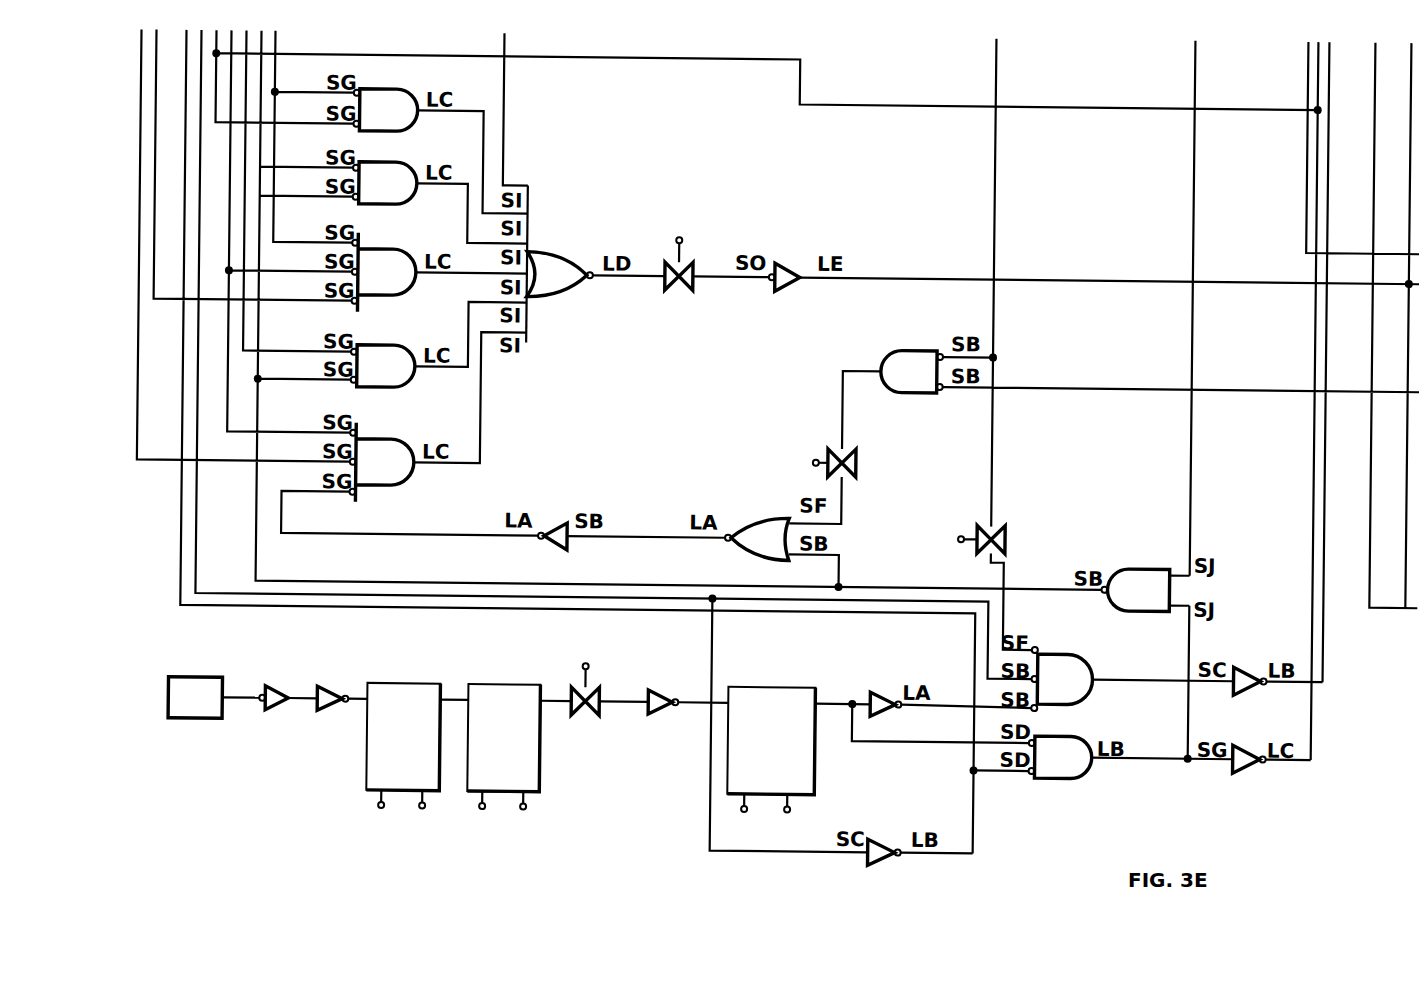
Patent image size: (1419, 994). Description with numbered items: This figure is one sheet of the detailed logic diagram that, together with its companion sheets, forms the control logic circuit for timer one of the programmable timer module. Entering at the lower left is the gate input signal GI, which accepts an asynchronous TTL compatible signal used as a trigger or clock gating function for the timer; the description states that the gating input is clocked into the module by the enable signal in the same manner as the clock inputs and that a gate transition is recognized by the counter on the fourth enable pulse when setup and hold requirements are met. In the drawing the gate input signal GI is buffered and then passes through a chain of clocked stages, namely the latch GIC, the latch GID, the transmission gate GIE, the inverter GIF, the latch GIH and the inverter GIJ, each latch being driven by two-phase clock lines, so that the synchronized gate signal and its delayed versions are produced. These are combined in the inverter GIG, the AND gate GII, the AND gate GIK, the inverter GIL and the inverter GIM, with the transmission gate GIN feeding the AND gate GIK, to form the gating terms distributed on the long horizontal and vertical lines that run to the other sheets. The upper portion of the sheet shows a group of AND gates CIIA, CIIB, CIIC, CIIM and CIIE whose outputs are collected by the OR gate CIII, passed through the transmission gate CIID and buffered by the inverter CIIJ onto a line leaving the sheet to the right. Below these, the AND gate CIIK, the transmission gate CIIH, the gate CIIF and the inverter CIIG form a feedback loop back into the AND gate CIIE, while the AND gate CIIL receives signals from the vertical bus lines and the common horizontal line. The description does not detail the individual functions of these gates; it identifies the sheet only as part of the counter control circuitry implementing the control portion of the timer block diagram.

The AND gate CIIA is at (441, 138).
The AND gate CIIB is at (440, 189).
The AND gate CIIC is at (439, 268).
The AND gate CIIM is at (439, 345).
The AND gate CIIE is at (437, 417).
The OR gate CIII is at (596, 265).
The transmission gate TB CIID is at (709, 274).
The inverter CIIJ is at (1089, 263).
The AND gate CIIK is at (917, 386).
The transmission gate TA CIIH is at (845, 486).
The NOR gate CIIF is at (782, 540).
The inverter CIIG is at (503, 520).
The transmission gate TA GIN is at (984, 577).
The AND gate CIIL is at (1145, 576).
The AND gate GIK is at (1132, 671).
The AND gate GII is at (1130, 744).
The inverter GIL is at (1274, 667).
The inverter GIM is at (1268, 745).
The gate input signal GI is at (211, 692).
The delay latch GIC is at (417, 745).
The delay latch GID is at (519, 746).
The transmission gate TA GIE is at (609, 698).
The inverter GIF is at (687, 685).
The delay latch GIH is at (799, 750).
The inverter GIJ is at (948, 688).
The inverter GIG is at (881, 835).